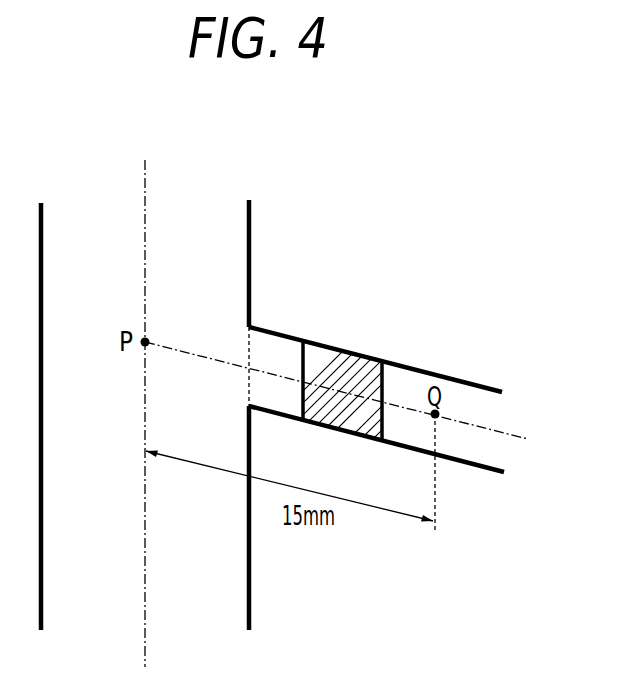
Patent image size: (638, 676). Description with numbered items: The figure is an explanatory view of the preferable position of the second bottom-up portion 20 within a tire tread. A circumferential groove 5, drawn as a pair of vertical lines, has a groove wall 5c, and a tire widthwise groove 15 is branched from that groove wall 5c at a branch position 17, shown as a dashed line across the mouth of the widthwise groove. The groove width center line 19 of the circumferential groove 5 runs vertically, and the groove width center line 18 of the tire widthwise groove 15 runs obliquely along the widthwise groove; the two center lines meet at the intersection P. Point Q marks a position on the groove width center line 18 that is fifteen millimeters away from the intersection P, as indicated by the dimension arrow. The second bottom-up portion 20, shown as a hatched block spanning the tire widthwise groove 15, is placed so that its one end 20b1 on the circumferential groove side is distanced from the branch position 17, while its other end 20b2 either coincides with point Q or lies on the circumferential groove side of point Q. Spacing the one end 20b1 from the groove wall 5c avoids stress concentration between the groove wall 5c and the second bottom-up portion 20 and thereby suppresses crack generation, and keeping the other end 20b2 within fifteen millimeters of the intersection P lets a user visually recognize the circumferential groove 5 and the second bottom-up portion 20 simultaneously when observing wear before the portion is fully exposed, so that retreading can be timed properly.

The circumferential groove 5 is at (95, 243).
The groove wall 5c is at (249, 240).
The tire widthwise groove 15 is at (472, 405).
The branch position 17 is at (247, 348).
The groove width center line of the tire widthwise groove 18 is at (404, 404).
The groove width center line of the circumferential groove 19 is at (145, 408).
The second bottom-up portion 20 is at (343, 373).
The one end on the circumferential groove side of the second bottom-up portion 20b1 is at (303, 400).
The other end of the second bottom-up portion 20b2 is at (383, 422).